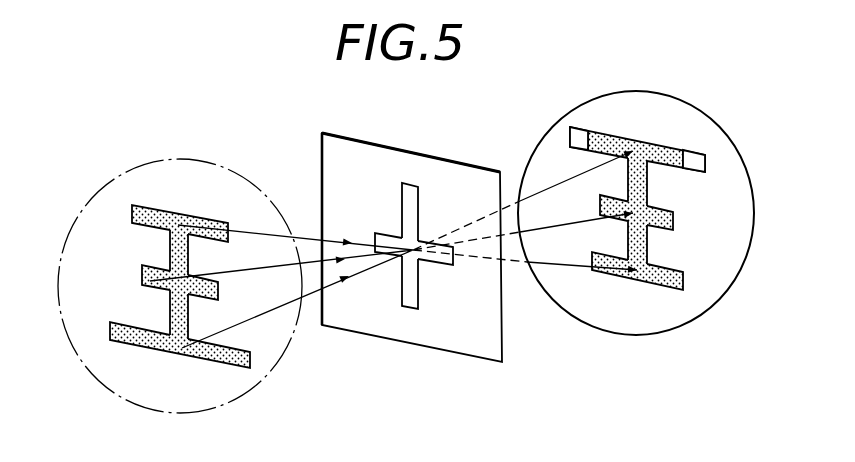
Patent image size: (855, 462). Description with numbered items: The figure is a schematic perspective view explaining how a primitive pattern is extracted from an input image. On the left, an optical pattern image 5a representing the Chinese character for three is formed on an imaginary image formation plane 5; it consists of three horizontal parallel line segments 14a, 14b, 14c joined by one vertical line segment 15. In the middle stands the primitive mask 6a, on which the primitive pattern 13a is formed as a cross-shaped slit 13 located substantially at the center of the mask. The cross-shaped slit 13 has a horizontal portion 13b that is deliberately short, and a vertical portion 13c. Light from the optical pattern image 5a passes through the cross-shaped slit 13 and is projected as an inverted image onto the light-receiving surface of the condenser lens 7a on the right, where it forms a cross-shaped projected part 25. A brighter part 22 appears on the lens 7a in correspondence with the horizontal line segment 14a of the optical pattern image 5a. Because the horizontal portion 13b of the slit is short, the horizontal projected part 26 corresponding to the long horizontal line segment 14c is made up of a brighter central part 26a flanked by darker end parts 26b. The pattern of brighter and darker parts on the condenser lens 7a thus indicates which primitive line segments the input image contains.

The imaginary image formation plane 5 is at (143, 158).
The optical pattern image 5a is at (138, 271).
The horizontal line segment 14a is at (149, 212).
The horizontal line segment 14b is at (143, 277).
The horizontal line segment 14c is at (125, 335).
The vertical line segment 15 is at (173, 250).
The primitive mask 6a is at (415, 168).
The cross-shaped slit 13 is at (443, 239).
The primitive pattern 13a is at (383, 233).
The horizontal portion 13b is at (445, 267).
The lower arm of aperture 13c is at (415, 298).
The condenser lens 7a is at (673, 113).
The cross-shaped projected part 25 is at (642, 216).
The horizontal projected part 26 is at (631, 110).
The central part 26a is at (607, 140).
The end parts 26b is at (578, 132).
The brighter part 22 is at (655, 292).